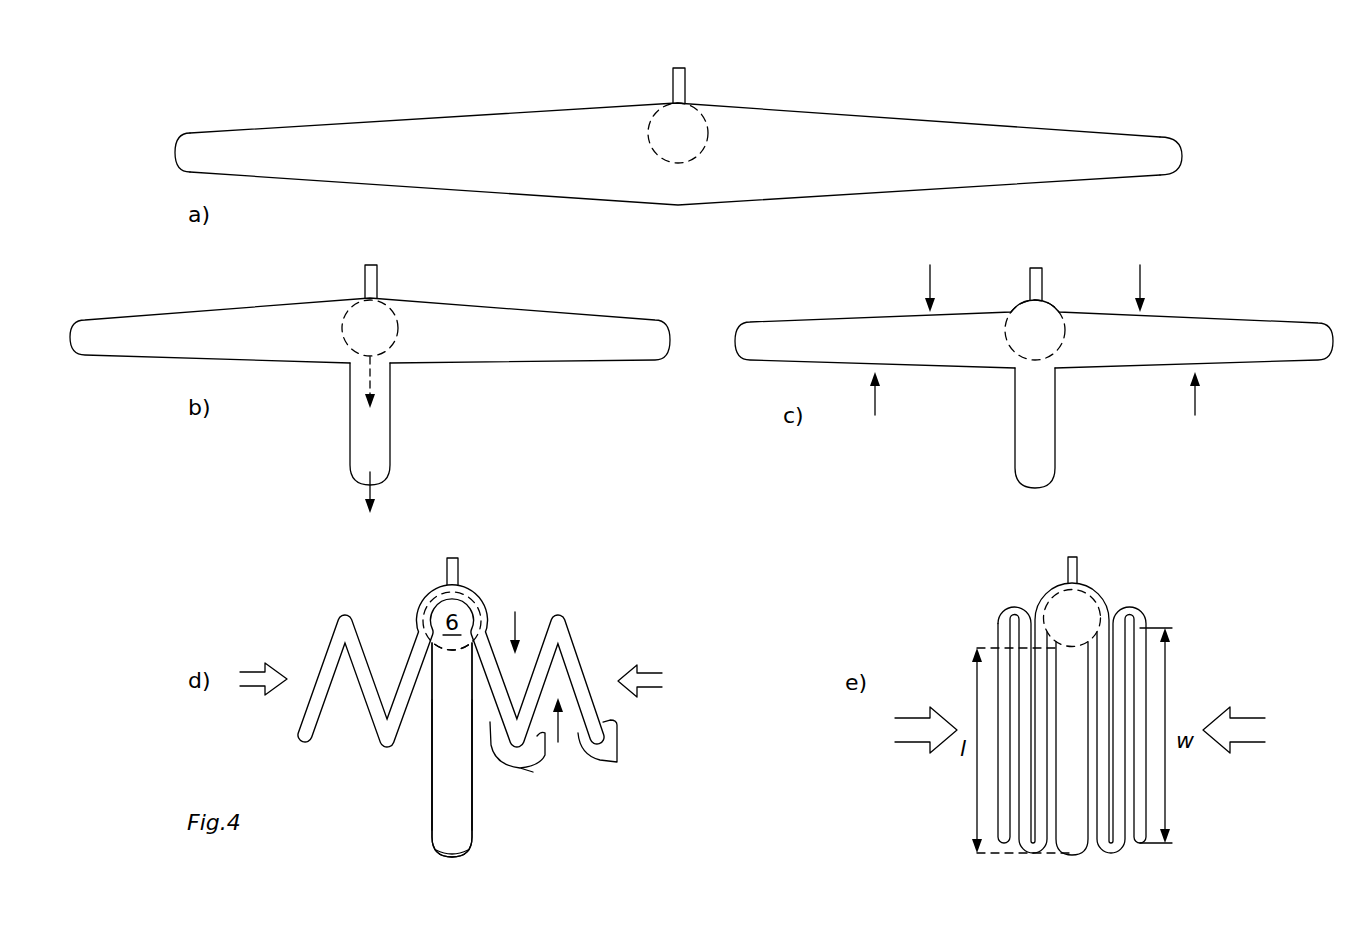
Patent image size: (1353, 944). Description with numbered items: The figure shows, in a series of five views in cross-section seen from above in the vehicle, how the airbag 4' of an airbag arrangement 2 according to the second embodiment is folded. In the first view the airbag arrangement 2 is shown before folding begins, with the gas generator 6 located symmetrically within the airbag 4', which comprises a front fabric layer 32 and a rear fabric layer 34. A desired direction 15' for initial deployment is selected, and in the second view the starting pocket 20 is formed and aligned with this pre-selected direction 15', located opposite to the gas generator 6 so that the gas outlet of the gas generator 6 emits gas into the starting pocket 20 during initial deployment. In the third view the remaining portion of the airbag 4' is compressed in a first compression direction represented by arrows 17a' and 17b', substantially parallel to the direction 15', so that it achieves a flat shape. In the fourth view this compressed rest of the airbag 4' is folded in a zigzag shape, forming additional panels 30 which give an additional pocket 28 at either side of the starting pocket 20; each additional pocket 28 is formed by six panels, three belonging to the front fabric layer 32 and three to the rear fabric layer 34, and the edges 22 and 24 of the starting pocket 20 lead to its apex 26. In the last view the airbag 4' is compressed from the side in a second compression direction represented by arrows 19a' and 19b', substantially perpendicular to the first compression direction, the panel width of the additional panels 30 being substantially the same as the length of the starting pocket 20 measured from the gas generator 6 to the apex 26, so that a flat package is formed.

The airbag arrangement 2 is at (292, 89).
The airbag 4' is at (701, 220).
The gas generator 6 is at (700, 134).
The direction for initial deployment 15' is at (405, 382).
The arrow representing first compression direction 17a' is at (853, 448).
The arrow representing first compression direction 17b' is at (905, 590).
The arrow representing second compression direction 19a' is at (598, 709).
The arrow representing second compression direction 19b' is at (949, 712).
The starting pocket 20 is at (384, 438).
The shank side edge 22 is at (472, 776).
The shank side edge 24 is at (432, 776).
The apex 26 is at (452, 860).
The additional pocket 28 is at (580, 677).
The additional panel 30 is at (511, 752).
The front fabric layer 32 is at (1020, 186).
The rear fabric layer 34 is at (900, 118).